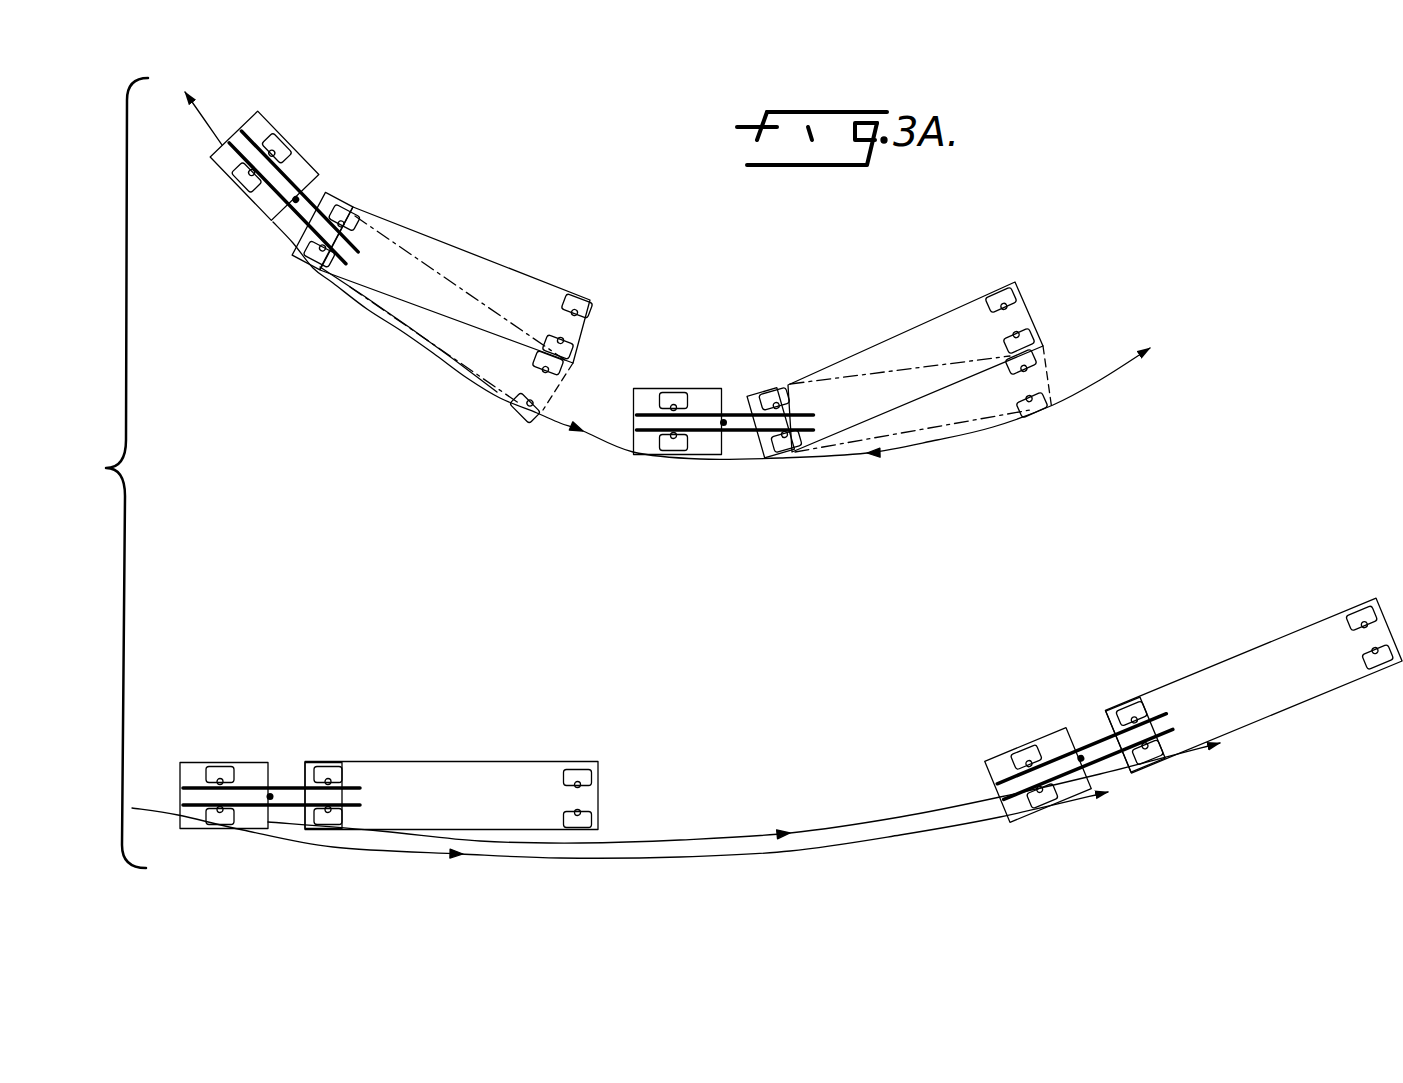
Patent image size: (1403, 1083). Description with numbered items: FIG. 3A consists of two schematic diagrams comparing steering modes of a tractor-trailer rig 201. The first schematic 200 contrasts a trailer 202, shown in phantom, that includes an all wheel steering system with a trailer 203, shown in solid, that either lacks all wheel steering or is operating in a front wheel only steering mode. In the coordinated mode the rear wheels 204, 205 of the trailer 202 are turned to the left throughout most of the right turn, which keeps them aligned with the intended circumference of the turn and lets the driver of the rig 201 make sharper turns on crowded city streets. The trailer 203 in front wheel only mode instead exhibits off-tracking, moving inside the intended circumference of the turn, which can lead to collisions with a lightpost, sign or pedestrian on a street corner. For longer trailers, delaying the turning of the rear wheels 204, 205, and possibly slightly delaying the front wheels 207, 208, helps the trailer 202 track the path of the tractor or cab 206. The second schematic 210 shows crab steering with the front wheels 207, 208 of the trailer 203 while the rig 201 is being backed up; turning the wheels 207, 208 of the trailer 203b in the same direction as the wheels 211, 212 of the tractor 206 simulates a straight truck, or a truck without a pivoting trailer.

The first schematic 200 is at (753, 245).
The tractor-trailer rig 201 is at (497, 248).
The trailer 202 is at (433, 355).
The trailer 203 is at (424, 236).
The trailer 203b is at (530, 764).
The rear wheel 204 is at (578, 348).
The rear wheel 205 is at (596, 298).
The tractor or cab 206 is at (262, 118).
The front wheel 207 is at (315, 266).
The front wheel 208 is at (352, 212).
The second schematic 210 is at (725, 690).
The tractor wheel 211 is at (242, 190).
The tractor wheel 212 is at (289, 143).